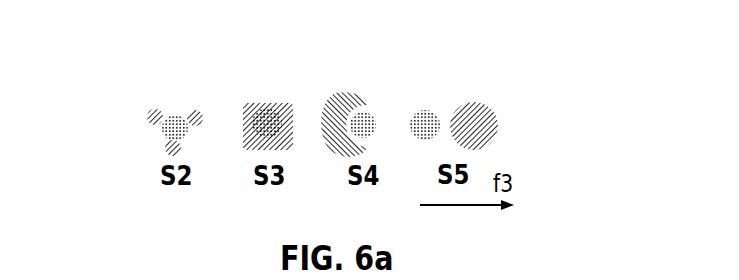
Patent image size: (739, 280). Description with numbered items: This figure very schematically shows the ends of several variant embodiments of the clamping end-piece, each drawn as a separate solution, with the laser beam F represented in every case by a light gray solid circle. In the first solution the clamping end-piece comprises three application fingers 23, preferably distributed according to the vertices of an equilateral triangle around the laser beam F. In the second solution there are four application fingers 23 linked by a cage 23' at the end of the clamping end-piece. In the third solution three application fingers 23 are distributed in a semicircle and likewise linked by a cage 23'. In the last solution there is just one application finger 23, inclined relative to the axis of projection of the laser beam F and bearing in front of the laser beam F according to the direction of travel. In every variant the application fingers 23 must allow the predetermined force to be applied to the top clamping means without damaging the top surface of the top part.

The application fingers 23 is at (291, 94).
The cage 23' is at (271, 122).
The laser beam F is at (167, 130).